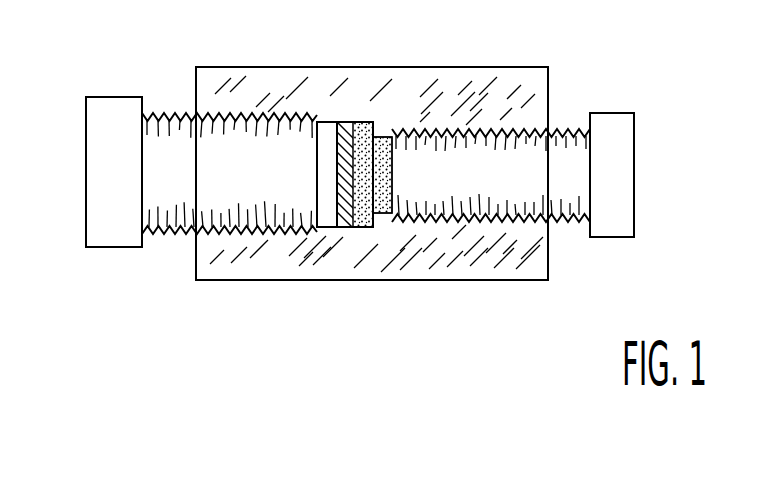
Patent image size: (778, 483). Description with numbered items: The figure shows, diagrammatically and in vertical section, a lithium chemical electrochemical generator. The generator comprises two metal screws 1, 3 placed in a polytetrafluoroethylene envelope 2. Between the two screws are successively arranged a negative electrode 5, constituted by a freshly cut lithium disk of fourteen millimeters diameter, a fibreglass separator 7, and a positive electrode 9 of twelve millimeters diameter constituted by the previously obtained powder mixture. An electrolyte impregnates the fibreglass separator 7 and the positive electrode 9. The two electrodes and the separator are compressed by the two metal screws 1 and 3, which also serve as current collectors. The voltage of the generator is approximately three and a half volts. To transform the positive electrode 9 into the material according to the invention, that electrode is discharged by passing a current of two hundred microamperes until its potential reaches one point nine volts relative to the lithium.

The metal screw 1 is at (127, 117).
The polytetrafluoroethylene envelope 2 is at (300, 78).
The metal screw 3 is at (556, 160).
The negative electrode 5 is at (340, 174).
The fibreglass separator 7 is at (370, 212).
The positive electrode 9 is at (391, 135).